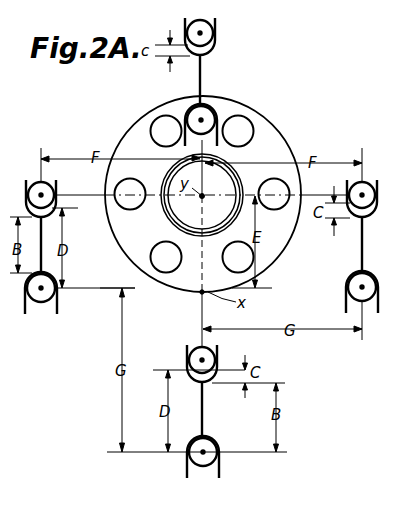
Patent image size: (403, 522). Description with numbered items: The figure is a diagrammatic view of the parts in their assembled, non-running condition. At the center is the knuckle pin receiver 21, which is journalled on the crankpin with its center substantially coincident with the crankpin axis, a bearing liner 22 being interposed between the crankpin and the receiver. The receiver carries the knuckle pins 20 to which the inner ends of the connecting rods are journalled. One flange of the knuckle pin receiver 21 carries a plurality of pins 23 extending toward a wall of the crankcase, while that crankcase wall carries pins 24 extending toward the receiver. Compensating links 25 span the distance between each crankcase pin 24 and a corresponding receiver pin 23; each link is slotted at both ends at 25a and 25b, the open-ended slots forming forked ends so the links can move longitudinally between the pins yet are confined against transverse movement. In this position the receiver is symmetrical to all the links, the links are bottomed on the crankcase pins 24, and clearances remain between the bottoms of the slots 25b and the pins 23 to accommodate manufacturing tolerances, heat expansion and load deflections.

The knuckle pin 20 is at (163, 251).
The knuckle pin receiver 21 is at (273, 124).
The bearing liner 22 is at (237, 172).
The pin 23 is at (208, 31).
The pin 24 is at (206, 118).
The compensating link 25 is at (204, 76).
The slot 25a is at (357, 277).
The slot 25b is at (45, 213).